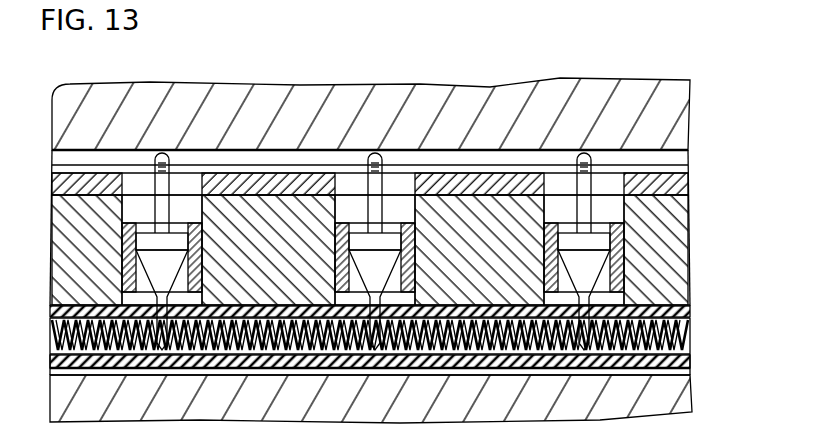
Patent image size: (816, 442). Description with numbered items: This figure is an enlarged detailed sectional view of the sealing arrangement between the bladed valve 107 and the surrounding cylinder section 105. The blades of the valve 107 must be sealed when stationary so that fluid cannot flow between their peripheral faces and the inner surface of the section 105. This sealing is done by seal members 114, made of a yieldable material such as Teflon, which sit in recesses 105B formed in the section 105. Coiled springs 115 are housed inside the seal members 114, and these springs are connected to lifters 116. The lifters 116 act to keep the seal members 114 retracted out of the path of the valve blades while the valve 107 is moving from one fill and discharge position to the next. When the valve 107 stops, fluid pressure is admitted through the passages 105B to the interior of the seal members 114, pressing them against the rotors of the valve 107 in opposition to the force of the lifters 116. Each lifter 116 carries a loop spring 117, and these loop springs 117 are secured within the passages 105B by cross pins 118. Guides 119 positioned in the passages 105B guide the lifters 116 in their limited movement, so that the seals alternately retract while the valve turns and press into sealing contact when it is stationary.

The cylinder section 105 is at (490, 90).
The recesses (passages) in the section 105B is at (609, 211).
The valve 107 is at (600, 408).
The seal members 114 is at (682, 364).
The coiled springs 115 is at (688, 333).
The lifters 116 is at (606, 283).
The loop springs 117 is at (157, 186).
The cross pins 118 is at (688, 172).
The guides 119 is at (195, 228).